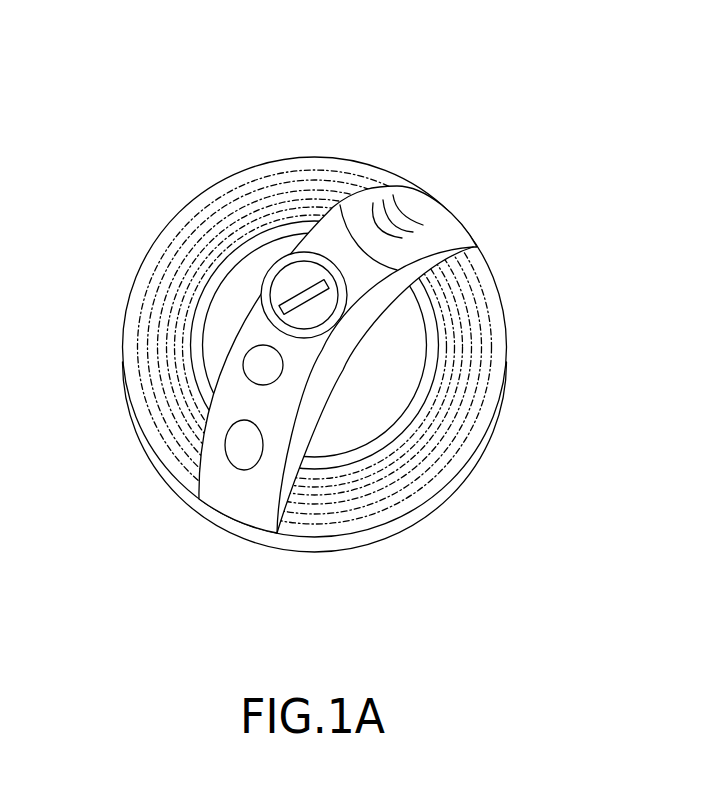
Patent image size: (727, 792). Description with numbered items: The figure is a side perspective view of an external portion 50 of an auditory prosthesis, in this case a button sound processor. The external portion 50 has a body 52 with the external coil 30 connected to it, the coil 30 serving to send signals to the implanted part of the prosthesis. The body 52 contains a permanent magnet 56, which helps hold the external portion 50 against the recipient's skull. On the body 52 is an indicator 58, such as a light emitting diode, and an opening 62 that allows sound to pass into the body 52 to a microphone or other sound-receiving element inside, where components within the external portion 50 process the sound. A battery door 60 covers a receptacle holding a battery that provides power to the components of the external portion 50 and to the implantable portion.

The external portion 50 is at (308, 310).
The external coil 30 is at (148, 365).
The body 52 is at (216, 482).
The permanent magnet 56 is at (292, 280).
The indicator 58 is at (242, 448).
The battery door 60 is at (437, 237).
The opening 62 is at (257, 362).